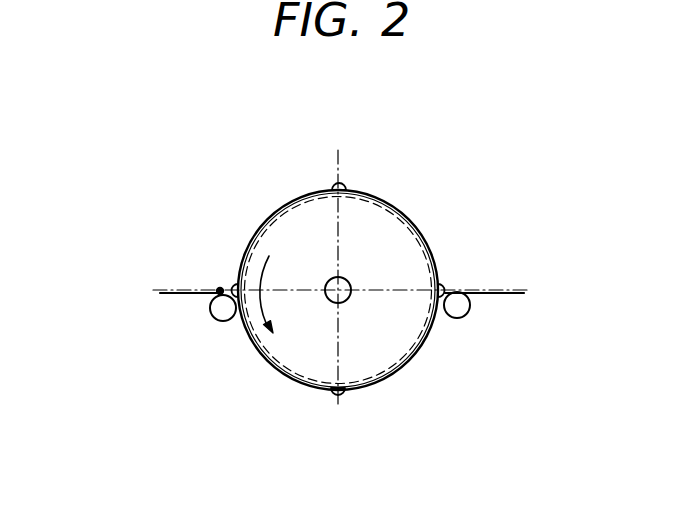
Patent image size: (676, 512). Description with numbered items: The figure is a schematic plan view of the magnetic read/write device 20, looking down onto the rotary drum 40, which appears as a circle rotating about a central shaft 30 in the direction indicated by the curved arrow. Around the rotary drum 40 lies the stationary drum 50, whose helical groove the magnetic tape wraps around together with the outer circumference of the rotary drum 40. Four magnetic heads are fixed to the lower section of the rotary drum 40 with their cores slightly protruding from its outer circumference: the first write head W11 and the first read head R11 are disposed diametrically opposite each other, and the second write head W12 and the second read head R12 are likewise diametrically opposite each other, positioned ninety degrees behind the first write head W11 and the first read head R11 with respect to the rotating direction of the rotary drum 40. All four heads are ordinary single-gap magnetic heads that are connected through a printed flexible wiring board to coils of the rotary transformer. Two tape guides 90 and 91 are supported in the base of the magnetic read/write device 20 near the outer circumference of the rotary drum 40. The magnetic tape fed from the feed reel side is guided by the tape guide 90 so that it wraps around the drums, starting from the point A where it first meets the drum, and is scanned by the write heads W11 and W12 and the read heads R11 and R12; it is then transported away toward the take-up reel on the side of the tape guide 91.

The magnetic read/write device 20 is at (423, 238).
The shaft 30 is at (330, 277).
The rotary drum 40 is at (433, 262).
The stationary drum 50 is at (377, 204).
The tape guide 90 is at (218, 310).
The tape guide 91 is at (457, 308).
The first write head W11 is at (235, 285).
The second write head W12 is at (336, 186).
The first read head R11 is at (443, 285).
The second read head R12 is at (333, 389).
The point A is at (220, 291).